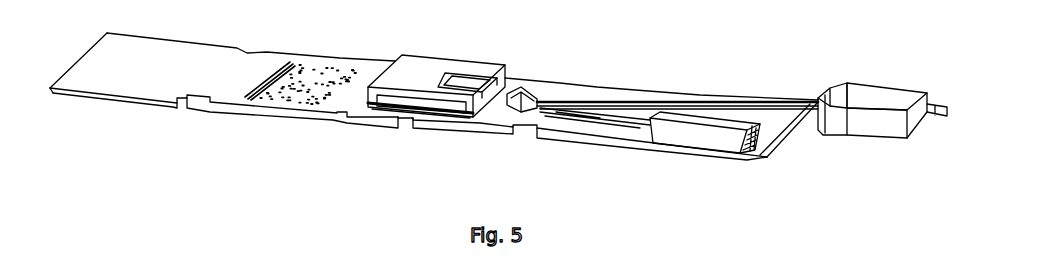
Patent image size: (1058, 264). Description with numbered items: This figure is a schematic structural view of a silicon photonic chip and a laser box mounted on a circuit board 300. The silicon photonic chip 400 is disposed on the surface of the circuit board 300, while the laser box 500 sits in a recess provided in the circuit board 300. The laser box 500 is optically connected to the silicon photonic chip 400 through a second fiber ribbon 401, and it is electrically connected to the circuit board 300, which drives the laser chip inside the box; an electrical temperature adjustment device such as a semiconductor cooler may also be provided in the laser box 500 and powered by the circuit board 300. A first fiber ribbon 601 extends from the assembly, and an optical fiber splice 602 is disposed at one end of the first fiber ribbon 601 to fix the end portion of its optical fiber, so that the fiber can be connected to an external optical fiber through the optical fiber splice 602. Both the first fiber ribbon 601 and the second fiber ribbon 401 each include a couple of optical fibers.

The circuit board 300 is at (168, 57).
The silicon photonic chip 400 is at (458, 53).
The second fiber ribbon 401 is at (607, 117).
The laser box 500 is at (677, 135).
The first fiber ribbon 601 is at (703, 98).
The optical fiber splice 602 is at (870, 92).